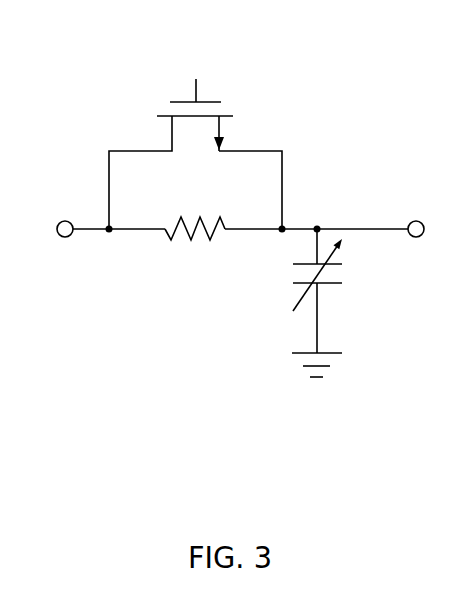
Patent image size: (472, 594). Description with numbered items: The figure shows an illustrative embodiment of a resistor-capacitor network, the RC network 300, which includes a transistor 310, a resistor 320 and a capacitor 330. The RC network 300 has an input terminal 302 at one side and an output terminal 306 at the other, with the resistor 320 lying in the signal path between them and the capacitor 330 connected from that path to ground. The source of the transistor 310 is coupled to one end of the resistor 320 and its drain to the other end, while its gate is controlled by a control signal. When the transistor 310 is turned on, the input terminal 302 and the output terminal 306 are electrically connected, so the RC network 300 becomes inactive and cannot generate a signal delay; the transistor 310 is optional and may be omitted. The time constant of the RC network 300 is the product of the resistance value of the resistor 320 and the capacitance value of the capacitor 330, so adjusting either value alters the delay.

The RC network 300 is at (98, 45).
The input terminal 302 is at (64, 220).
The output terminal 306 is at (417, 219).
The transistor 310 is at (236, 103).
The resistor 320 is at (169, 249).
The capacitor 330 is at (352, 278).